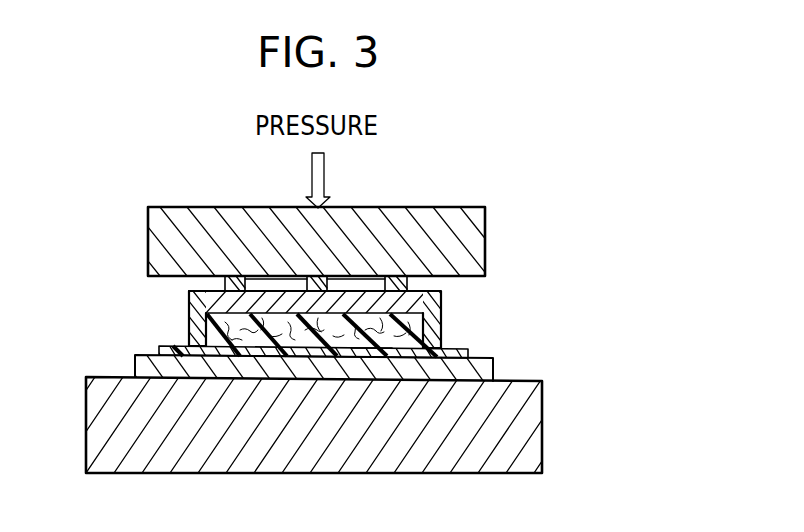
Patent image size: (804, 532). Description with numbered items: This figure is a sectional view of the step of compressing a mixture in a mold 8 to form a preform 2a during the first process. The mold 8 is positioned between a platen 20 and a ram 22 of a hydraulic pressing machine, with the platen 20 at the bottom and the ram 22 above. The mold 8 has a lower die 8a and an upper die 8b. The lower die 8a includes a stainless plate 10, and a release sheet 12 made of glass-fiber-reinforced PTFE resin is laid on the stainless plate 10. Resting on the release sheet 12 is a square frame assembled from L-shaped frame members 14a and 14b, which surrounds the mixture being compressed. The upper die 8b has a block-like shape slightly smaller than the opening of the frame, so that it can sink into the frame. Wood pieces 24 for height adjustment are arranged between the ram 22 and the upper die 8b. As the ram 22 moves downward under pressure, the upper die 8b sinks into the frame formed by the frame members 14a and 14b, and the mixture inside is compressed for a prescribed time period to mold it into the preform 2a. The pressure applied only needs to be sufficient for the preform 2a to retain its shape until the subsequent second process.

The ram 22 is at (485, 238).
The wood pieces 24 is at (226, 280).
The mold 8 is at (128, 301).
The lower die 8a is at (183, 317).
The upper die 8b is at (441, 299).
The L-shaped frame member 14a is at (187, 332).
The L-shaped frame member 14b is at (441, 316).
The release sheet 12 is at (288, 352).
The preform 2a is at (368, 348).
The stainless plate 10 is at (493, 369).
The platen 20 is at (544, 409).